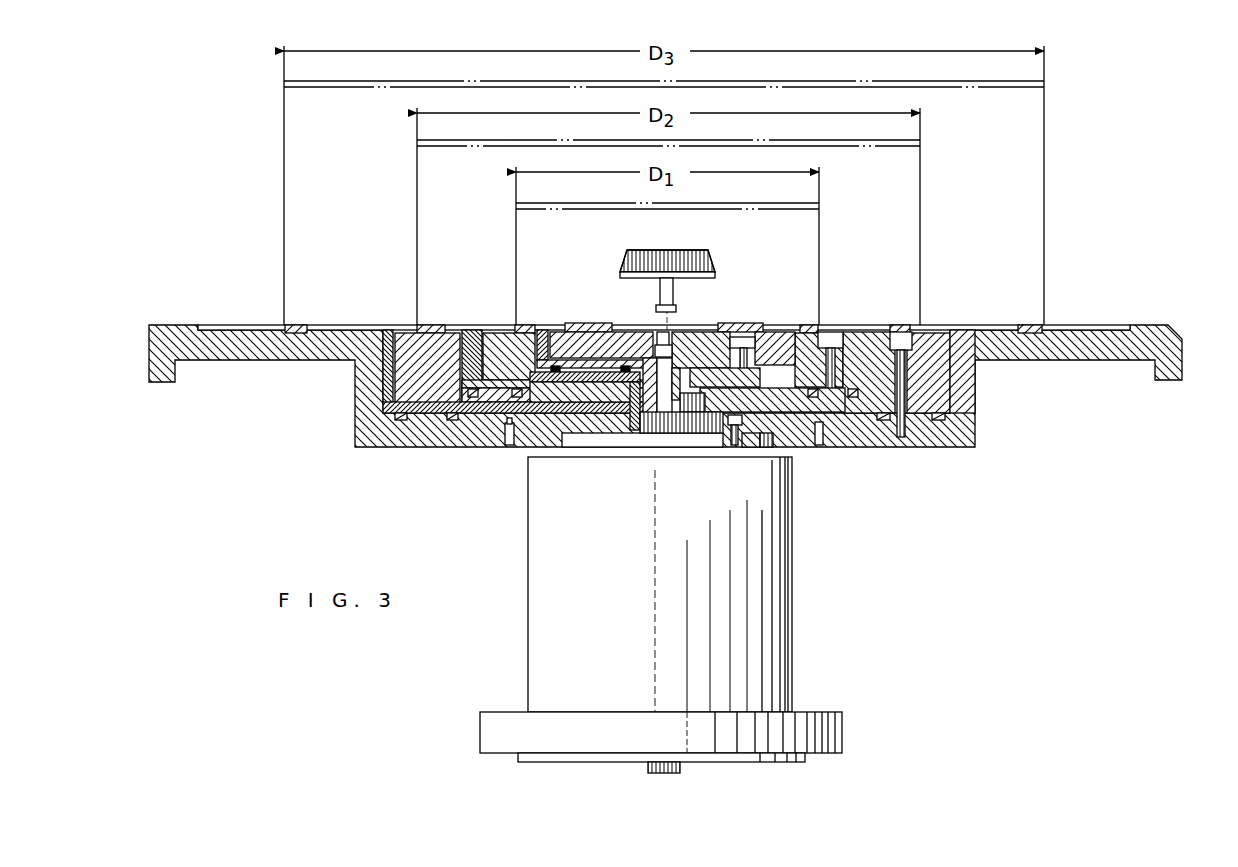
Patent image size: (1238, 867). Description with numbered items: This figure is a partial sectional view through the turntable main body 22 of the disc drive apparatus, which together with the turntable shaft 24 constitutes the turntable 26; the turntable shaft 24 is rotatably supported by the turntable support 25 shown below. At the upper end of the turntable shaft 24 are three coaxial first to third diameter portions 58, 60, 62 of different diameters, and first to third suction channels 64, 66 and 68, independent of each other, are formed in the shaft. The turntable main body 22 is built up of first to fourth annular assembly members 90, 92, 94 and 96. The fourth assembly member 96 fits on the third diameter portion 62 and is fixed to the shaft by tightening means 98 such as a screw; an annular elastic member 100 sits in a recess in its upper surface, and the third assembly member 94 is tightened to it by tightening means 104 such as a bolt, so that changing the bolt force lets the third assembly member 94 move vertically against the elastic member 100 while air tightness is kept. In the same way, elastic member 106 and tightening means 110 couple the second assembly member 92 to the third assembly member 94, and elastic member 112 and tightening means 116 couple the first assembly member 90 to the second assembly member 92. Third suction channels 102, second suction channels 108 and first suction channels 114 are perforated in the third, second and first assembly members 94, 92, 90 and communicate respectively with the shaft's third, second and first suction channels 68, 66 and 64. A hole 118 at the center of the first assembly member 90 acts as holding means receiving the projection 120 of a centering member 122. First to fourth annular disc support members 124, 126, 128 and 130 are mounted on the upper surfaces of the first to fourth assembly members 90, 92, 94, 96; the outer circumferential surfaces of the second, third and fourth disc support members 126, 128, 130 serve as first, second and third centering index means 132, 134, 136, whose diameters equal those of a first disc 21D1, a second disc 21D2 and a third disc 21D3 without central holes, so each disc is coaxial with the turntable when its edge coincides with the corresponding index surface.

The first disc 21D1 is at (702, 210).
The second disc 21D2 is at (816, 148).
The third disc 21D3 is at (942, 88).
The turntable main body 22 is at (1140, 338).
The turntable shaft 24 is at (715, 447).
The turntable support 25 is at (792, 592).
The turntable 26 is at (806, 466).
The first diameter portion 58 is at (655, 350).
The second diameter portion 60 is at (560, 392).
The third diameter portion 62 is at (605, 385).
The first suction channel 64 is at (690, 434).
The second suction channel 66 is at (650, 415).
The third suction channel 68 is at (670, 415).
The first assembly member 90 is at (778, 345).
The second assembly member 92 is at (865, 345).
The third assembly member 94 is at (935, 355).
The fourth assembly member 96 is at (1170, 350).
The tightening means 98 is at (752, 447).
The elastic member 100 is at (402, 420).
The third suction channel 102 is at (388, 332).
The tightening means 104 is at (915, 447).
The elastic member 106 is at (473, 397).
The second suction channel 108 is at (472, 333).
The tightening means 110 is at (832, 345).
The elastic member 112 is at (512, 428).
The first suction channel 114 is at (543, 335).
The tightening means 116 is at (742, 340).
The hole 118 is at (662, 340).
The projection 120 is at (663, 292).
The centering member 122 is at (715, 258).
The first annular disc support member 124 is at (588, 326).
The second annular disc support member 126 is at (524, 326).
The third annular disc support member 128 is at (431, 326).
The fourth annular disc support member 130 is at (294, 326).
The first centering index means 132 is at (505, 335).
The second centering index means 134 is at (410, 335).
The third centering index means 136 is at (278, 326).